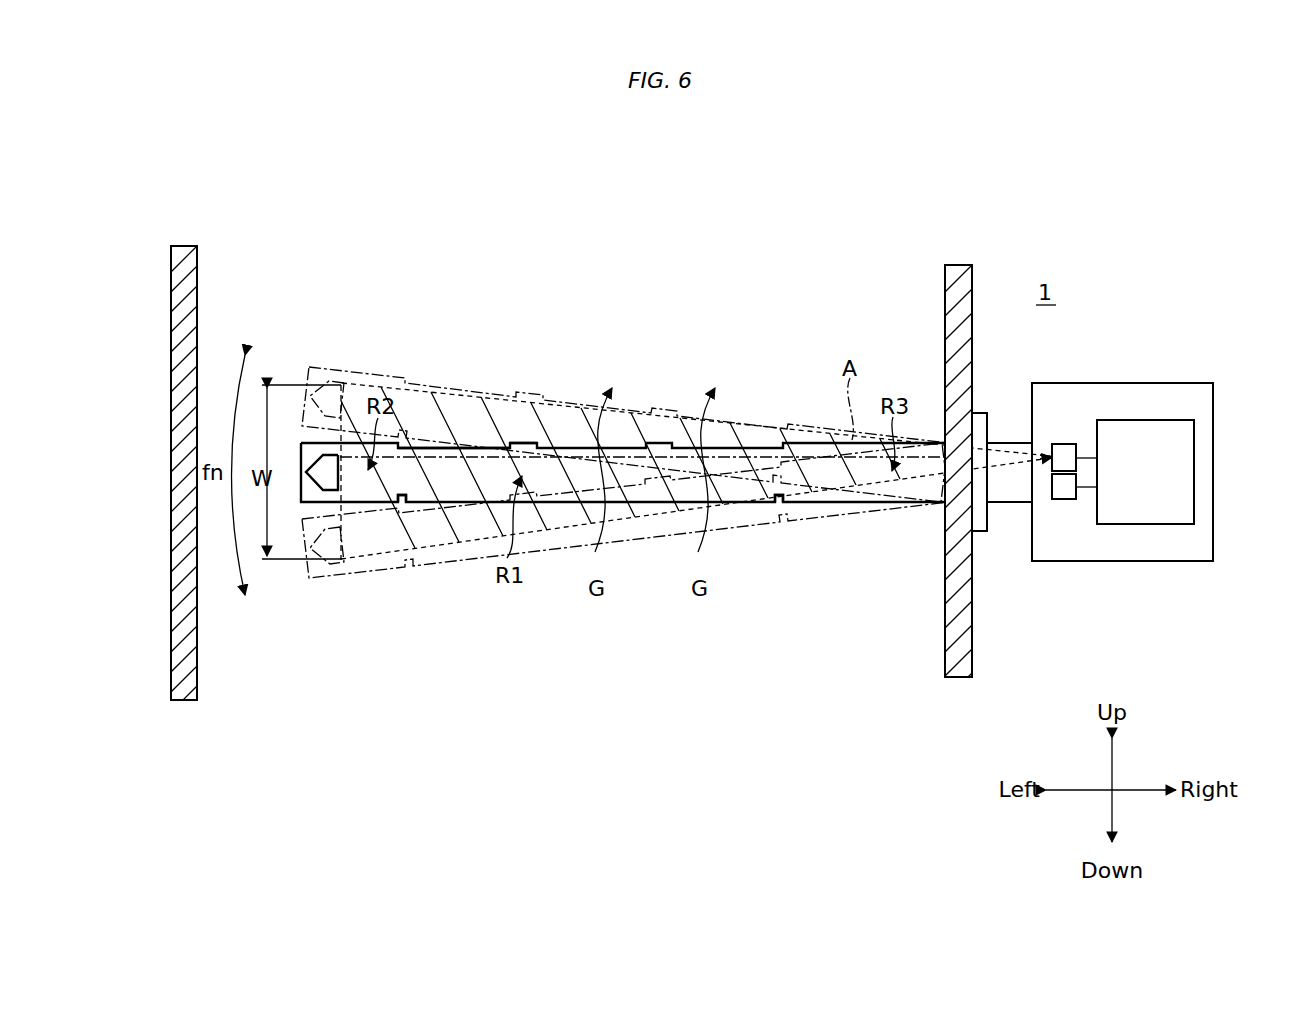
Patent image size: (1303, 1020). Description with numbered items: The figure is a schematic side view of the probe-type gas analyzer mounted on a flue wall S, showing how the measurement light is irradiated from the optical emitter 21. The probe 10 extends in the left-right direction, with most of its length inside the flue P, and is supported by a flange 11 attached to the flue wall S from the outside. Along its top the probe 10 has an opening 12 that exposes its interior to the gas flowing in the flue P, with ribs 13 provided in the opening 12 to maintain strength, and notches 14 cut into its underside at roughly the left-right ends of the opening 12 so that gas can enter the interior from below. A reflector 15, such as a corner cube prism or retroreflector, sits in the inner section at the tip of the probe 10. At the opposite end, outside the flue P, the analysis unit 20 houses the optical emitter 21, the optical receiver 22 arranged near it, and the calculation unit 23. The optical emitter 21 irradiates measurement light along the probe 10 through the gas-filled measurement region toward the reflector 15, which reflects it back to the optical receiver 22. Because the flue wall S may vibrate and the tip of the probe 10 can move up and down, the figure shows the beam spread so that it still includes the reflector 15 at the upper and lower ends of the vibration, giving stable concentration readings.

The probe 10 is at (893, 505).
The flange 11 is at (980, 424).
The opening 12 is at (459, 447).
The ribs 13 is at (534, 442).
The notches 14 is at (401, 506).
The reflector 15 is at (316, 492).
The analysis unit 20 is at (1158, 563).
The optical emitter 21 is at (1062, 450).
The optical receiver 22 is at (1062, 500).
The calculation unit 23 is at (1150, 420).
The flue wall S is at (976, 272).
The flue P is at (930, 270).